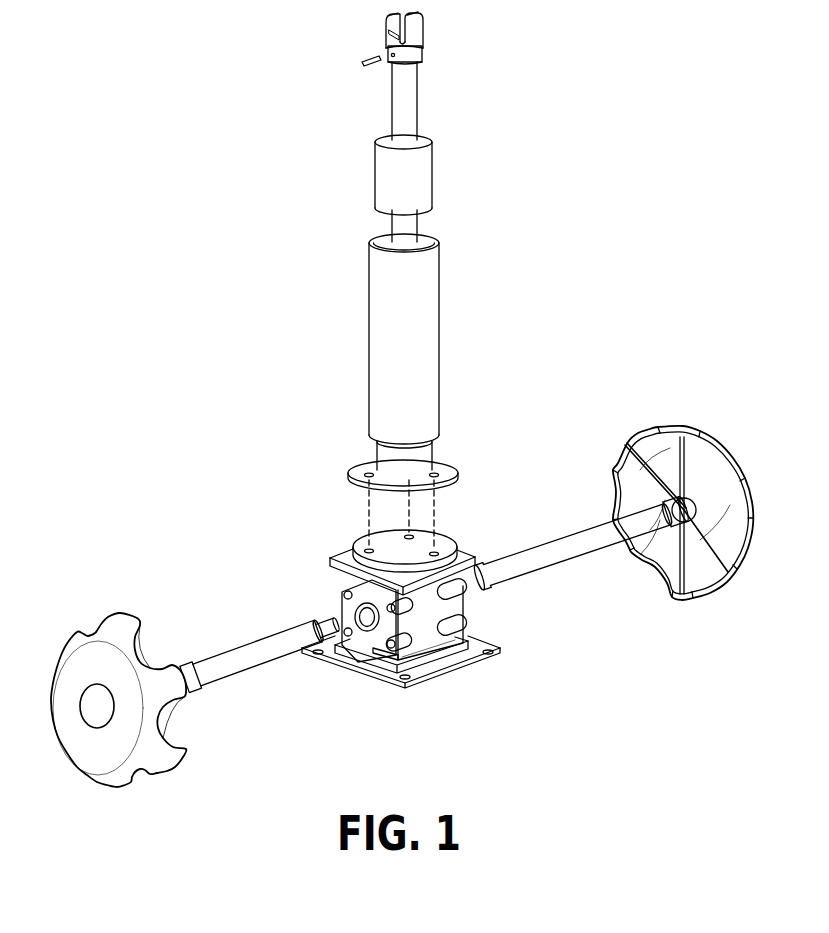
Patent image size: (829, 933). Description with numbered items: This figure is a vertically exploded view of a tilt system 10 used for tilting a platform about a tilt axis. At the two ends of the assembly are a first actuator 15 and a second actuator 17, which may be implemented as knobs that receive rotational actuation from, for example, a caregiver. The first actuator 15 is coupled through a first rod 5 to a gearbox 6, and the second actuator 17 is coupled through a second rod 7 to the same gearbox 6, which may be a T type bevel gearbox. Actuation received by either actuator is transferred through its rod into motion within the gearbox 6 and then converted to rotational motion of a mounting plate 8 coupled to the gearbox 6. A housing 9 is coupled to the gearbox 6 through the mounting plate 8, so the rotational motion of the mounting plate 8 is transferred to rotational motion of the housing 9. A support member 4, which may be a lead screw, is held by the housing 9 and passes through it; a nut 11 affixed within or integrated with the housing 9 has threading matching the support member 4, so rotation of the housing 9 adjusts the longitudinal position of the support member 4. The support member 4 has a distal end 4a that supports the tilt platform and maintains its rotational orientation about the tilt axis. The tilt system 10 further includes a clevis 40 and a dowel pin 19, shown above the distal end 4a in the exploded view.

The tilt system 10 is at (145, 345).
The clevis 40 is at (386, 37).
The distal end 4a is at (424, 57).
The dowel pin 19 is at (358, 64).
The support member 4 is at (421, 101).
The nut 11 is at (385, 176).
The housing 9 is at (385, 339).
The mounting plate 8 is at (357, 540).
The gearbox 6 is at (357, 590).
The first rod 5 is at (245, 660).
The second rod 7 is at (568, 548).
The first actuator 15 is at (121, 618).
The second actuator 17 is at (688, 425).